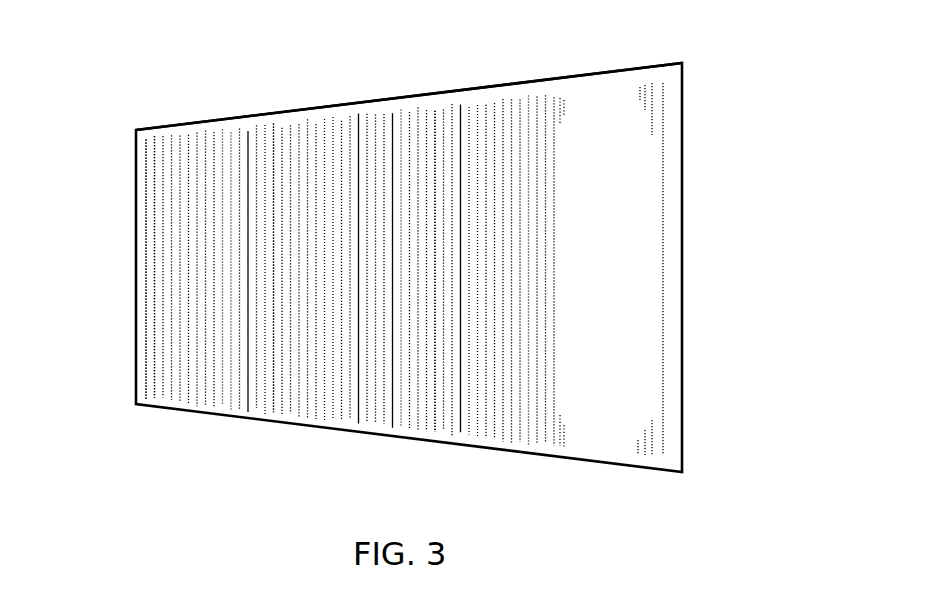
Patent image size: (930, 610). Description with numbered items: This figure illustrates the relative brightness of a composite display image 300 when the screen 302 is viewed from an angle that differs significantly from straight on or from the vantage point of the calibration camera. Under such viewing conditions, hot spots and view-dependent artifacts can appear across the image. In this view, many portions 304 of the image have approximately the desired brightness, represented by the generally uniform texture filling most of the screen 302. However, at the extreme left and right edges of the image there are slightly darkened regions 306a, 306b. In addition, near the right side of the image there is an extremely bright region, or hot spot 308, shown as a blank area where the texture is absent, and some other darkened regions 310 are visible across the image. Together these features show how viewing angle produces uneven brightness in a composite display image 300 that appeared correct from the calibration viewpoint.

The composite display image 300 is at (388, 102).
The screen 302 is at (235, 116).
The portions of the image 304 is at (357, 385).
The slightly darkened region 306a is at (160, 381).
The slightly darkened region 306b is at (652, 438).
The hot spot 308 is at (622, 250).
The darkened regions 310 is at (275, 364).